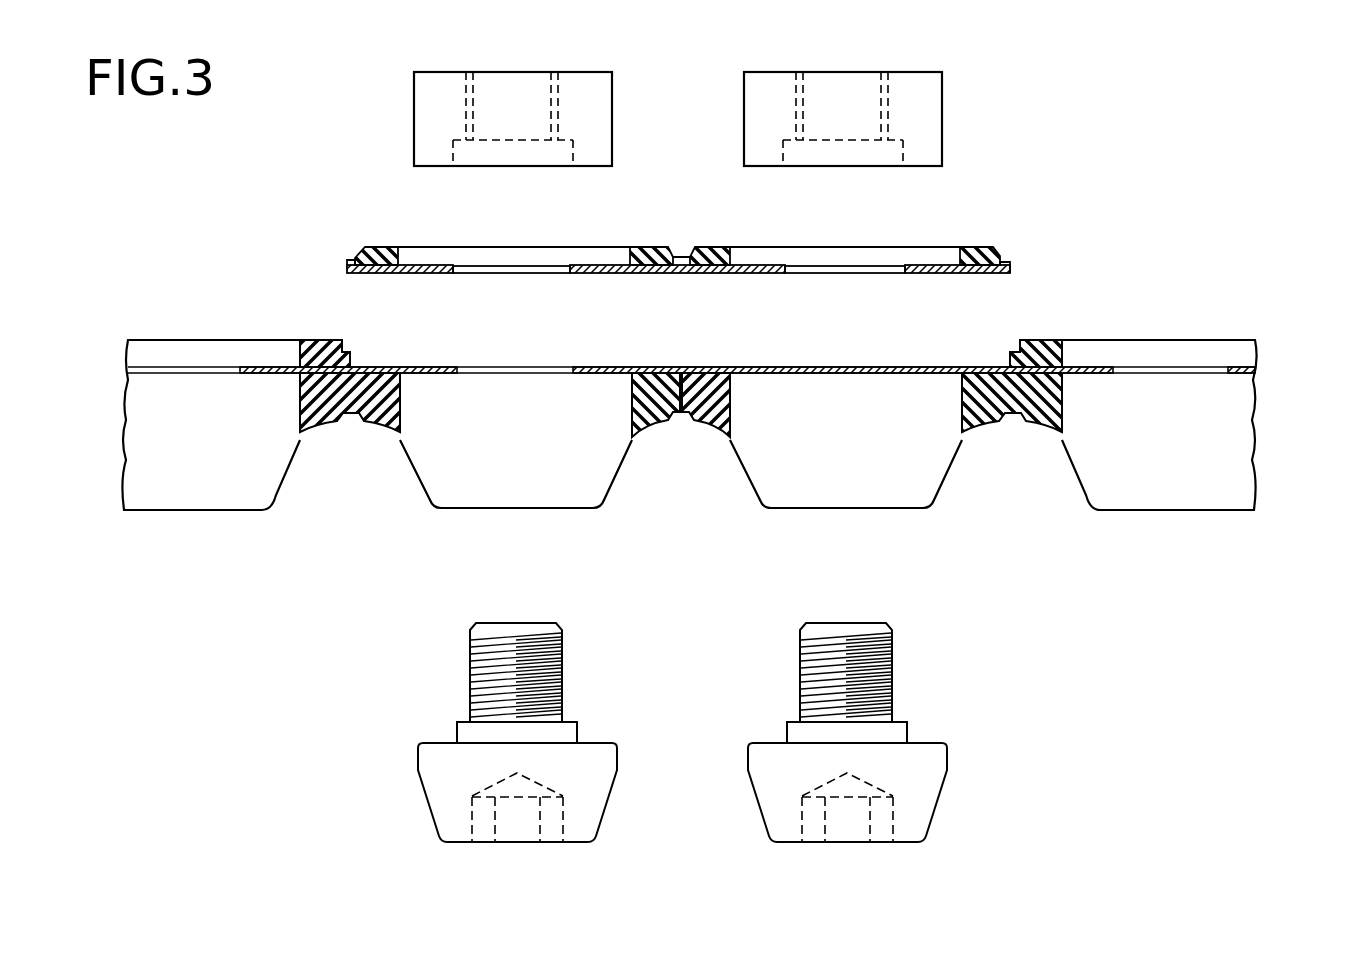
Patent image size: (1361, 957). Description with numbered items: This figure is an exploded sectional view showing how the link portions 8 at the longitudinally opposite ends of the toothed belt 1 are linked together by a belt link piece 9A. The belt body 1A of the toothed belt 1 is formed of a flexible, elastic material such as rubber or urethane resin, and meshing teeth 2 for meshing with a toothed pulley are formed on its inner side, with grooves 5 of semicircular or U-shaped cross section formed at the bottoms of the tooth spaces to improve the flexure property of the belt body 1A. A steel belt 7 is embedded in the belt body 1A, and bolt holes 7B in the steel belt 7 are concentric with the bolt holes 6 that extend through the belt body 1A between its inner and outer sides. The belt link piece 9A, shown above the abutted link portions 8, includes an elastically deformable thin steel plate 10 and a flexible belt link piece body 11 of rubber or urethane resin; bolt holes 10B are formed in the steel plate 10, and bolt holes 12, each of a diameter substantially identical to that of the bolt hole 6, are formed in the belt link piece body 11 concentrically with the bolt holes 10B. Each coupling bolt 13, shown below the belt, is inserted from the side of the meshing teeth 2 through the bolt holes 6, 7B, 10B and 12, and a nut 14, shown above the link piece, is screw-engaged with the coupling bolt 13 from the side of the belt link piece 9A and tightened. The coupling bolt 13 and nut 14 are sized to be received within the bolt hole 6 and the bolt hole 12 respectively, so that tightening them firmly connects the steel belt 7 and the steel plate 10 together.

The toothed belt 1 is at (704, 415).
The belt body 1A is at (125, 462).
The meshing teeth 2 is at (237, 510).
The grooves 5 is at (1005, 425).
The bolt holes 6 is at (300, 350).
The steel belt 7 is at (691, 330).
The bolt holes 7B is at (458, 367).
The link portion 8 is at (582, 360).
The belt link piece 9A is at (701, 231).
The steel plate 10 is at (920, 266).
The bolt holes 10B is at (575, 266).
The belt link piece body 11 is at (365, 250).
The bolt holes 12 is at (400, 252).
The coupling bolt 13 is at (438, 777).
The nut 14 is at (586, 84).